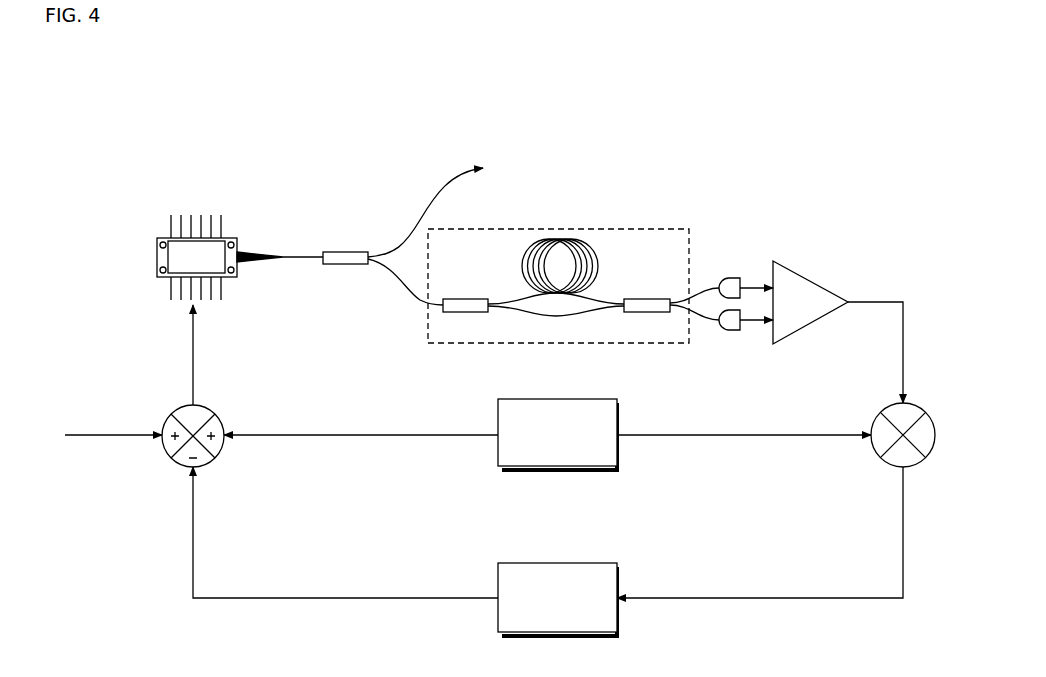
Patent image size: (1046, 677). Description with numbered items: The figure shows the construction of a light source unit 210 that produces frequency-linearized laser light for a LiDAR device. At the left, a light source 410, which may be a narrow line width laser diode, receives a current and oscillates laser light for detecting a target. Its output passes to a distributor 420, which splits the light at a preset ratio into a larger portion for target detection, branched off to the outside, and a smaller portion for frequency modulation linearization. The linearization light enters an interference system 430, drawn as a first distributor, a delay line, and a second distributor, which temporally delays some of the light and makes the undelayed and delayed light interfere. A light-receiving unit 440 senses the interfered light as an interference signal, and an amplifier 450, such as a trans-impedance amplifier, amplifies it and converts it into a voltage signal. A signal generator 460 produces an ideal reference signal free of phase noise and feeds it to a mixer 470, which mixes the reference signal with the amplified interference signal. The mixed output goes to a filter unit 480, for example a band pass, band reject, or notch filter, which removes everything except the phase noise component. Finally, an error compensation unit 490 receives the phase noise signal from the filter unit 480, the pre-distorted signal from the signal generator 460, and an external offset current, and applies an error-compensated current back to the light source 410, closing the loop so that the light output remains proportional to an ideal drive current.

The light source unit 210 is at (527, 94).
The light source 410 is at (198, 255).
The distributor 420 is at (343, 252).
The interference system 430 is at (650, 229).
The light-receiving unit 440 is at (731, 279).
The amplifier 450 is at (812, 298).
The signal generator 460 is at (560, 399).
The mixer 470 is at (903, 417).
The filter unit 480 is at (560, 563).
The error compensation unit 490 is at (197, 417).